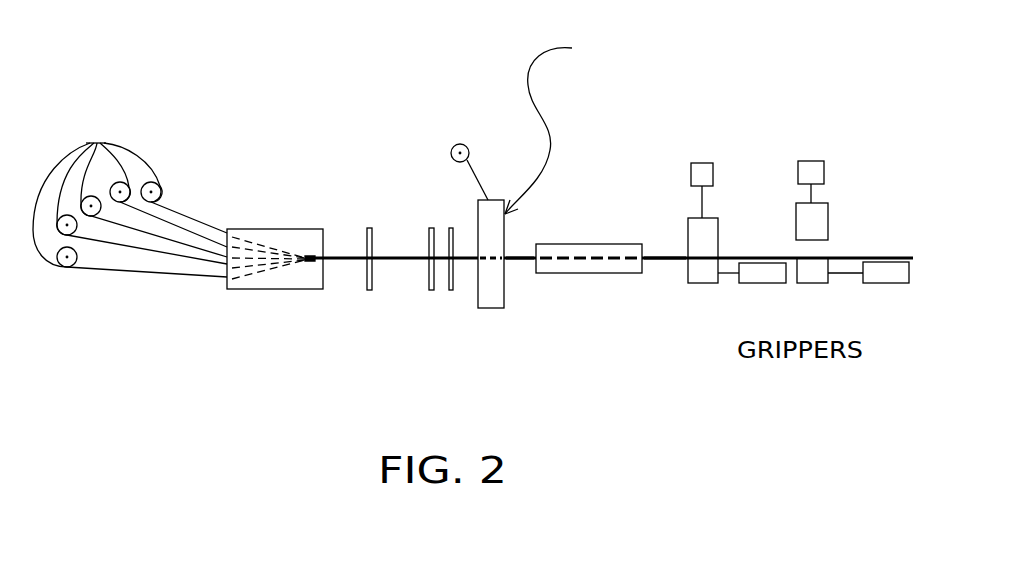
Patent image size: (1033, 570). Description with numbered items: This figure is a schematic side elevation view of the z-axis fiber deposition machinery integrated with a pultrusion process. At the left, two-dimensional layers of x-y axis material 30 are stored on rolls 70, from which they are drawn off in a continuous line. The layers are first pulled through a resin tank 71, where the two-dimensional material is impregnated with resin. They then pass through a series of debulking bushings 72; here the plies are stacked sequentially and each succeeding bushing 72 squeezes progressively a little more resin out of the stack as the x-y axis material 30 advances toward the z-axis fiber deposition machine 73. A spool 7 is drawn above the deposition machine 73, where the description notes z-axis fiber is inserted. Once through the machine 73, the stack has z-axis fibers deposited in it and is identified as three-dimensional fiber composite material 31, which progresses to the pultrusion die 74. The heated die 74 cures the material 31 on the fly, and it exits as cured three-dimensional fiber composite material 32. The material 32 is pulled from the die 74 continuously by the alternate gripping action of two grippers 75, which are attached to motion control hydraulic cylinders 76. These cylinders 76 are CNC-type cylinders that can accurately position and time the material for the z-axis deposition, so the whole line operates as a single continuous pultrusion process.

The rolls 70 is at (120, 242).
The resin tank 71 is at (271, 229).
The x-y axis material 30 is at (403, 258).
The debulking bushings 72 is at (450, 290).
The Z-axis fiber spool 7 is at (481, 162).
The z-axis fiber deposition machine 73 is at (495, 308).
The pultrusion die 74 is at (599, 244).
The 3-D fiber composite material 31 is at (518, 260).
The cured 3D fiber composite material 32 is at (662, 258).
The grippers 75 is at (817, 161).
The motion control hydraulic cylinders 76 is at (765, 283).